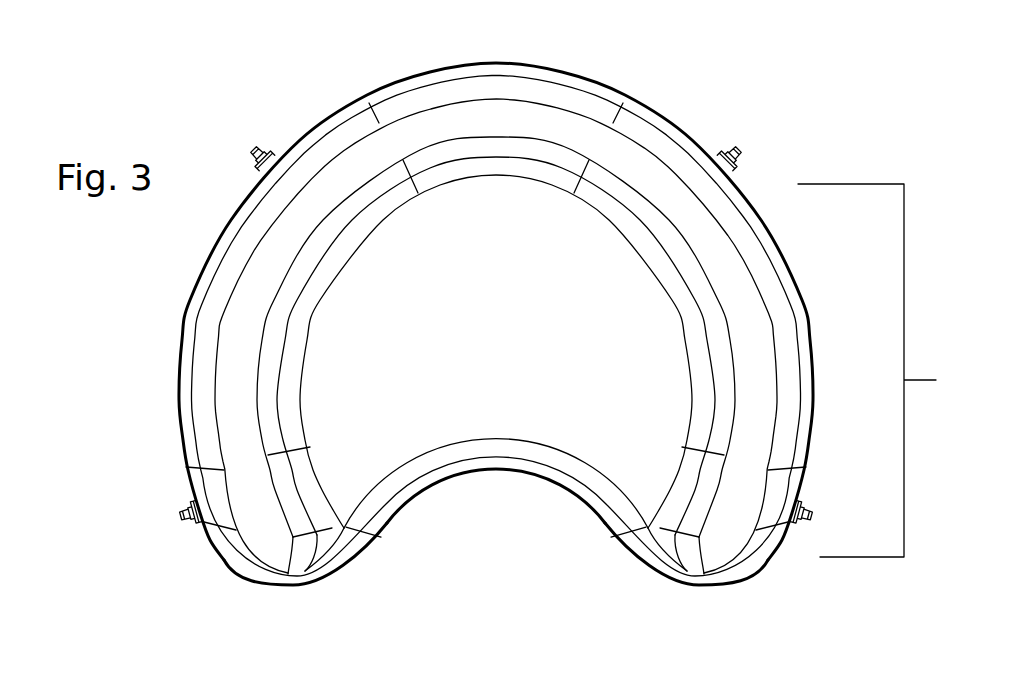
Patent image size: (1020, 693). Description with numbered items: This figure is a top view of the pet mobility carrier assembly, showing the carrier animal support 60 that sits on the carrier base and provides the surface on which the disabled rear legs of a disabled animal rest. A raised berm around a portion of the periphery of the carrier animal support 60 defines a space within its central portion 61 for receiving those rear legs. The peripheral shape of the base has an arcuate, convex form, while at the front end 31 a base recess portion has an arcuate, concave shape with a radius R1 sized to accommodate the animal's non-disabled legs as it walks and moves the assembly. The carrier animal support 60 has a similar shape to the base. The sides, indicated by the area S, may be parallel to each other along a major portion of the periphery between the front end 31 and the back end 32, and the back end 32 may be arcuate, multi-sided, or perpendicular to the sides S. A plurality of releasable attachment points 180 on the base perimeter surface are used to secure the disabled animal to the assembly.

The back end 32 is at (496, 293).
The front end 31 is at (303, 593).
The carrier animal support 60 is at (192, 365).
The central portion 61 is at (510, 349).
The releasable attachment points 180 is at (744, 143).
The radius R1 is at (522, 474).
The sides S is at (879, 370).